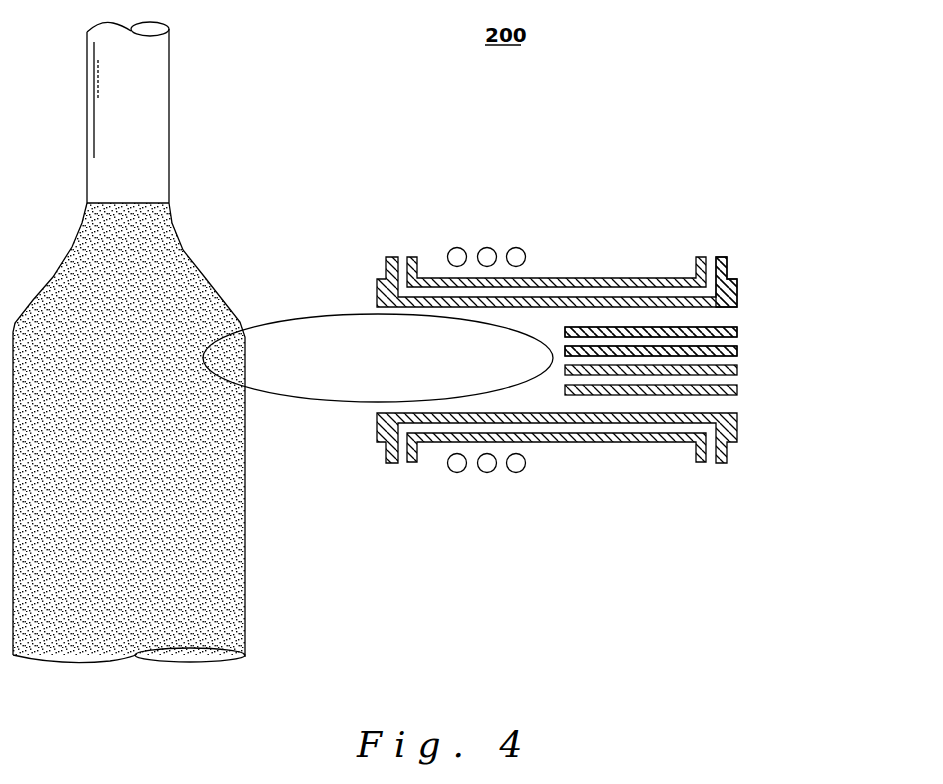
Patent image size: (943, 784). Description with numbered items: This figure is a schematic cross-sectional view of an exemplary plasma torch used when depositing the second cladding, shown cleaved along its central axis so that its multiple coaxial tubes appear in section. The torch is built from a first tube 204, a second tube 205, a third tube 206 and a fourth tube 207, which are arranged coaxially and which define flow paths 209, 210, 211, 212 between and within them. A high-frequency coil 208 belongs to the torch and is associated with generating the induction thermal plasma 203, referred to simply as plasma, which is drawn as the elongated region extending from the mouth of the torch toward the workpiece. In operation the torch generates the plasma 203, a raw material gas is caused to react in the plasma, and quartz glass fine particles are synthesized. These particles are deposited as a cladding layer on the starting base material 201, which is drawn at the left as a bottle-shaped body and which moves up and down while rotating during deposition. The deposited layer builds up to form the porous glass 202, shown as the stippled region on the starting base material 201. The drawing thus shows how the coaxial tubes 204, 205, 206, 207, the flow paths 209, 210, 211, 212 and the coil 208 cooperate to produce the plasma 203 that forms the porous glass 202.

The starting base material 201 is at (169, 90).
The porous glass 202 is at (213, 290).
The induction thermal plasma 203 is at (342, 355).
The first tube 204 is at (648, 345).
The second tube 205 is at (615, 326).
The third tube 206 is at (588, 297).
The fourth tube 207 is at (552, 277).
The high-frequency coil 208 is at (458, 247).
The flow path 209 is at (738, 360).
The flow path 210 is at (738, 340).
The flow path 211 is at (737, 315).
The flow path 212 is at (713, 257).